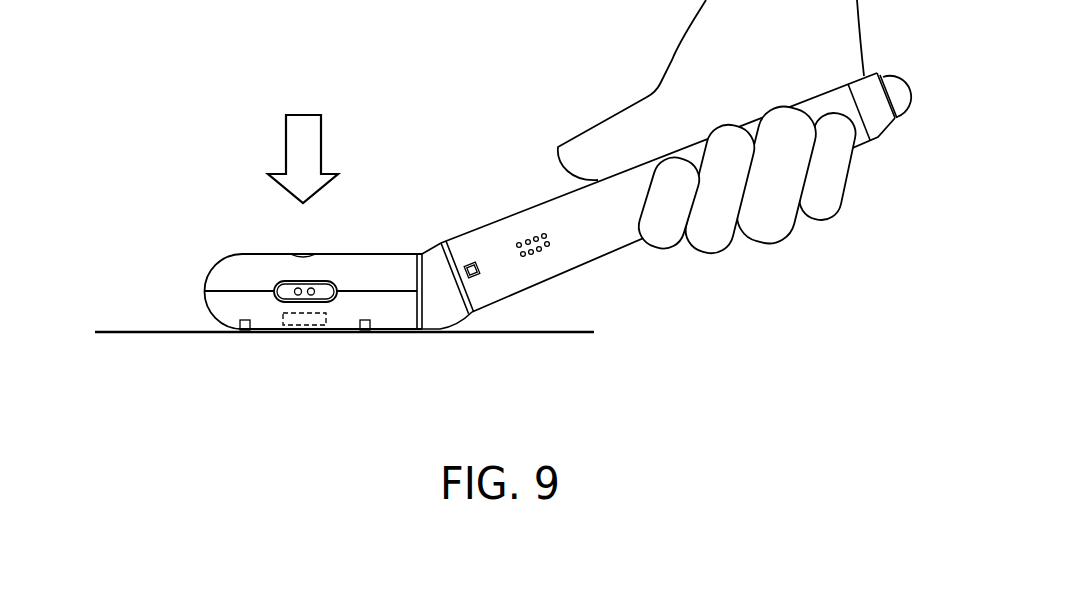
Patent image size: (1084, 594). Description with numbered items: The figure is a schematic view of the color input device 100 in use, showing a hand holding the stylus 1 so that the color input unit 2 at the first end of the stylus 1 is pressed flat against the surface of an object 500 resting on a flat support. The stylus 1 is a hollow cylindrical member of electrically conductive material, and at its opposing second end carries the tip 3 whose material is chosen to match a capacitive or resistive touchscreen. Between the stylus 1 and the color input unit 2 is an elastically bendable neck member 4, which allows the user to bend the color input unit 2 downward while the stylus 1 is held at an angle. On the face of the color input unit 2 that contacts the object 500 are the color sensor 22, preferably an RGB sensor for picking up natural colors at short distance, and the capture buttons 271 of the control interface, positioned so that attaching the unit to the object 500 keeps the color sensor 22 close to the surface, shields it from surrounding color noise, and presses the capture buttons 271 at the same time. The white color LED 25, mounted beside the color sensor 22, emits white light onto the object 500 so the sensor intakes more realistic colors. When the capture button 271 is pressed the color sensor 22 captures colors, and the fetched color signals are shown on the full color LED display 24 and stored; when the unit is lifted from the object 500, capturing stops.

The stylus 1 is at (517, 207).
The color input unit 2 is at (212, 266).
The tip 3 is at (903, 97).
The elastically bendable neck member 4 is at (433, 262).
The color sensor 22 is at (307, 327).
The full color LED display 24 is at (303, 254).
The white color LED 25 is at (317, 332).
The color input device 100 is at (605, 167).
The capture button 271 is at (237, 332).
The object 500 is at (140, 331).